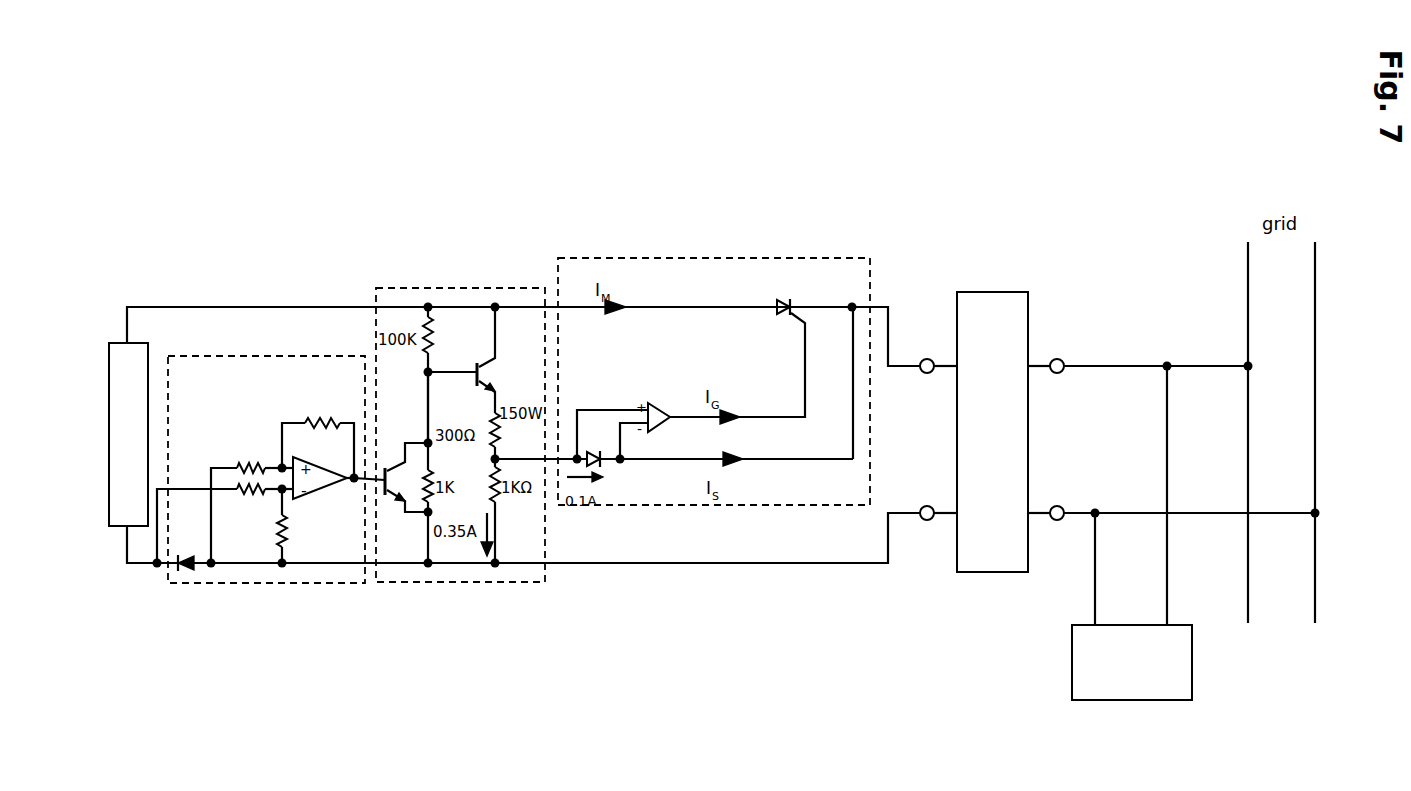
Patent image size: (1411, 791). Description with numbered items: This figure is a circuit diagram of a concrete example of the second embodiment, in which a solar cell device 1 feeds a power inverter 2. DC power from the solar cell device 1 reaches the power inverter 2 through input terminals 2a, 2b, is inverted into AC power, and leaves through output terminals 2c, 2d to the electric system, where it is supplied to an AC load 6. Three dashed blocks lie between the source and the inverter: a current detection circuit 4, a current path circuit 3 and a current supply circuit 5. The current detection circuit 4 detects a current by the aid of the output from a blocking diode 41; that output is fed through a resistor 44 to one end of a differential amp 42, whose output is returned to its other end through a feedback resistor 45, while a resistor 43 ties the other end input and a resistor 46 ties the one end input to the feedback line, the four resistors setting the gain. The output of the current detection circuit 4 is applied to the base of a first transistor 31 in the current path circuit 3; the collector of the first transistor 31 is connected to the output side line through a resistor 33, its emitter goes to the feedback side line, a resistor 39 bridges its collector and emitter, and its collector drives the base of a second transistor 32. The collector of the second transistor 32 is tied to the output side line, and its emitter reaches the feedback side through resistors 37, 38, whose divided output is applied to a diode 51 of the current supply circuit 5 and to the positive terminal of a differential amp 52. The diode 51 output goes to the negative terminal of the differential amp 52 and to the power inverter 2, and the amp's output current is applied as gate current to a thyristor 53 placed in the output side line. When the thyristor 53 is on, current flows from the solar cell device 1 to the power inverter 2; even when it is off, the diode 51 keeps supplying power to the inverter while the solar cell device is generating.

The solar cell device 1 is at (112, 346).
The power inverter 2 is at (988, 305).
The input terminal 2a is at (923, 353).
The input terminal 2b is at (922, 528).
The output terminal 2c is at (1053, 353).
The output terminal 2d is at (1052, 528).
The current path circuit 3 is at (468, 583).
The current detection circuit 4 is at (246, 583).
The current supply circuit 5 is at (704, 258).
The AC load 6 is at (1122, 632).
The first transistor 31 is at (383, 485).
The second transistor 32 is at (500, 355).
The resistor 33 is at (432, 332).
The resistor 37 is at (505, 437).
The resistor 38 is at (500, 497).
The resistor 39 is at (426, 483).
The blocking diode 41 is at (190, 572).
The differential amp 42 is at (298, 458).
The resistor 43 is at (245, 464).
The resistor 44 is at (250, 495).
The feedback resistor 45 is at (323, 416).
The resistor 46 is at (288, 524).
The diode 51 is at (605, 468).
The differential amp 52 is at (657, 405).
The thyristor (SCR) 53 is at (806, 300).